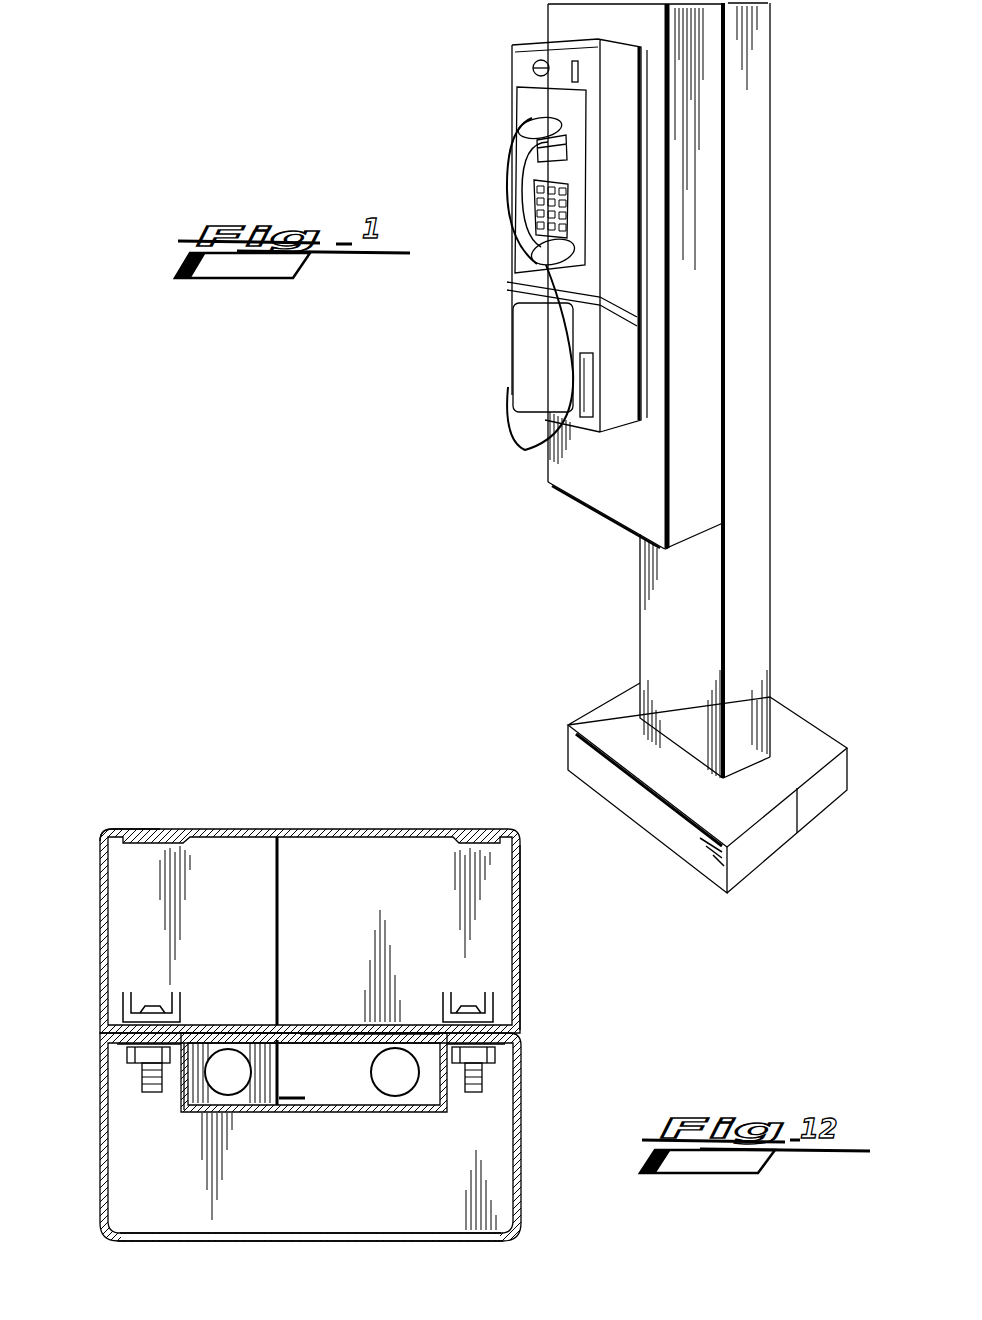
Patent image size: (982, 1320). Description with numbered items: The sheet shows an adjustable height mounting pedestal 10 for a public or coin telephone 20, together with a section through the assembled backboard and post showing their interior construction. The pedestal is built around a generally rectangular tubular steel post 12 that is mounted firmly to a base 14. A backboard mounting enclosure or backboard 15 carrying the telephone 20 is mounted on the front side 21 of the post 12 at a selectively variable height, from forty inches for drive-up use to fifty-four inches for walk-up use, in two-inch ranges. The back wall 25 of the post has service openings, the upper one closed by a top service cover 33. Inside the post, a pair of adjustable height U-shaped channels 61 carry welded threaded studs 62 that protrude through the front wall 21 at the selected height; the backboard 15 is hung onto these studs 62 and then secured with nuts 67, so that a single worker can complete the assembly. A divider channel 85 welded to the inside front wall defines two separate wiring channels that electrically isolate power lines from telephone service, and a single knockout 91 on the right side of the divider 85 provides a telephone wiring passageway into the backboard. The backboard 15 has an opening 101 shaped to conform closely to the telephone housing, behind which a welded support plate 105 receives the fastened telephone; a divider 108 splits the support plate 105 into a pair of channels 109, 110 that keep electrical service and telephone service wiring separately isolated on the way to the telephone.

In FIG. 1, the mounting pedestal 10 is at (816, 242).
In FIG. 1, the post 12 is at (757, 98).
In FIG. 12, the post 12 is at (522, 948).
In FIG. 1, the base 14 is at (800, 735).
In FIG. 1, the backboard mounting enclosure 15 is at (613, 512).
In FIG. 12, the backboard mounting enclosure 15 is at (523, 1152).
In FIG. 1, the coin telephone 20 is at (519, 63).
In FIG. 1, the front side 21 is at (680, 624).
In FIG. 12, the back wall 25 is at (128, 826).
In FIG. 12, the top service cover 33 is at (362, 826).
In FIG. 12, the U-shaped channel 61 is at (187, 1012).
In FIG. 12, the threaded stud 62 is at (150, 1092).
In FIG. 12, the nut 67 is at (127, 1057).
In FIG. 12, the divider channel 85 is at (300, 902).
In FIG. 12, the knockout 91 is at (358, 1040).
In FIG. 12, the opening 101 is at (412, 1208).
In FIG. 12, the support plate 105 is at (352, 1113).
In FIG. 12, the divider 108 is at (290, 1085).
In FIG. 12, the channel 109 is at (257, 1095).
In FIG. 12, the channel 110 is at (322, 1090).